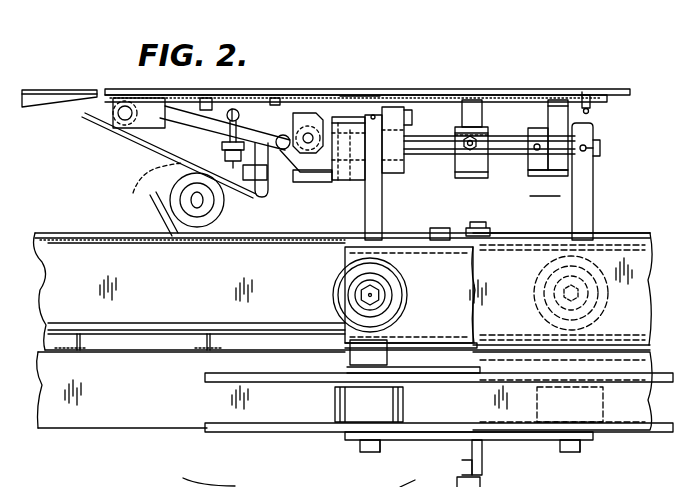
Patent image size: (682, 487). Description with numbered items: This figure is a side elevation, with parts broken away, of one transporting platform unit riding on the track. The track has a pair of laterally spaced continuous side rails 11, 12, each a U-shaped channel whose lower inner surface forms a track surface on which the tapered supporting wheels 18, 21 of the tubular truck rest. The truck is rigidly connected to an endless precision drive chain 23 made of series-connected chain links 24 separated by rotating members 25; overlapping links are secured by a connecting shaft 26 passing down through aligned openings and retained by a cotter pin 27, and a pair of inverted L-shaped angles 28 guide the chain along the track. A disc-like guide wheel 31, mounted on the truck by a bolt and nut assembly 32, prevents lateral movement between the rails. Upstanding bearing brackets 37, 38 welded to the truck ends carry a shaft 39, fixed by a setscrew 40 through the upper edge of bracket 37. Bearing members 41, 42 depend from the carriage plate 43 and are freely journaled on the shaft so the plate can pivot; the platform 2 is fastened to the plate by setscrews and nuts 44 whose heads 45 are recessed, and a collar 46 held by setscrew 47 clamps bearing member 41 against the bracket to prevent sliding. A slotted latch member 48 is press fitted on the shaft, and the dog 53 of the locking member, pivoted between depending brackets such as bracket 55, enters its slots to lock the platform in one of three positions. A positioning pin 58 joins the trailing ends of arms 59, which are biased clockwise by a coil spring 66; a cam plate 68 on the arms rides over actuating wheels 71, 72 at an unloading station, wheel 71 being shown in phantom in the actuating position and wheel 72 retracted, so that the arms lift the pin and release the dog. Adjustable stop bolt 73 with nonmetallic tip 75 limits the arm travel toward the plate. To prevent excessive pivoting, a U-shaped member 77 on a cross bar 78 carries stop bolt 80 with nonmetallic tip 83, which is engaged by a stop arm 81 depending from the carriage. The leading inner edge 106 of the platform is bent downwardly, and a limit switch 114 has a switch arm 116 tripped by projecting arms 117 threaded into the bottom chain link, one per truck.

The platform 2 is at (376, 96).
The side rail 11 is at (645, 275).
The side rail 12 is at (100, 236).
The supporting wheel 18 is at (334, 295).
The supporting wheel 21 is at (545, 295).
The endless precision drive chain 23 is at (339, 444).
The chain link 24 is at (300, 392).
The rotating member 25 is at (403, 404).
The connecting shaft 26 is at (368, 452).
The cotter pin 27 is at (384, 445).
The inverted L-shaped angle 28 is at (165, 428).
The guide wheel 31 is at (447, 232).
The bolt and nut assembly 32 is at (495, 218).
The bearing bracket 37 is at (365, 223).
The bearing bracket 38 is at (594, 200).
The shaft 39 is at (510, 140).
The setscrew 40 is at (600, 148).
The bearing member 41 is at (404, 120).
The bearing member 42 is at (553, 115).
The carriage plate 43 is at (352, 97).
The setscrews and nuts 44 is at (600, 114).
The head 45 is at (583, 93).
The collar 46 is at (546, 176).
The setscrew 47 is at (538, 150).
The latch member 48 is at (348, 180).
The dog 53 is at (314, 182).
The bracket 55 is at (299, 116).
The positioning pin 58 is at (280, 152).
The arm 59 is at (200, 125).
The coil spring 66 is at (228, 121).
The cam plate 68 is at (150, 157).
The actuating wheel 71 is at (133, 193).
The actuating wheel 72 is at (222, 214).
The adjustable stop bolt 73 is at (233, 162).
The nonmetallic tip 75 is at (236, 112).
The U-shaped member 77 is at (455, 165).
The cross bar 78 is at (538, 197).
The adjustable stop bolt 80 is at (462, 144).
The stop arm 81 is at (462, 114).
The nonmetallic tip 83 is at (456, 128).
The leading inner edge 106 is at (48, 100).
The limit switch 114 is at (481, 483).
The switch arm 116 is at (466, 463).
The projecting arm 117 is at (483, 458).